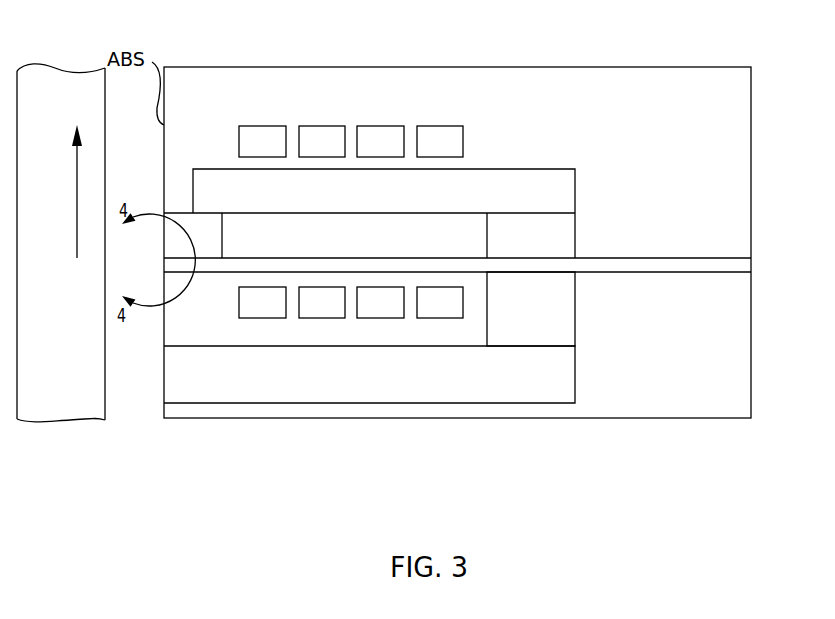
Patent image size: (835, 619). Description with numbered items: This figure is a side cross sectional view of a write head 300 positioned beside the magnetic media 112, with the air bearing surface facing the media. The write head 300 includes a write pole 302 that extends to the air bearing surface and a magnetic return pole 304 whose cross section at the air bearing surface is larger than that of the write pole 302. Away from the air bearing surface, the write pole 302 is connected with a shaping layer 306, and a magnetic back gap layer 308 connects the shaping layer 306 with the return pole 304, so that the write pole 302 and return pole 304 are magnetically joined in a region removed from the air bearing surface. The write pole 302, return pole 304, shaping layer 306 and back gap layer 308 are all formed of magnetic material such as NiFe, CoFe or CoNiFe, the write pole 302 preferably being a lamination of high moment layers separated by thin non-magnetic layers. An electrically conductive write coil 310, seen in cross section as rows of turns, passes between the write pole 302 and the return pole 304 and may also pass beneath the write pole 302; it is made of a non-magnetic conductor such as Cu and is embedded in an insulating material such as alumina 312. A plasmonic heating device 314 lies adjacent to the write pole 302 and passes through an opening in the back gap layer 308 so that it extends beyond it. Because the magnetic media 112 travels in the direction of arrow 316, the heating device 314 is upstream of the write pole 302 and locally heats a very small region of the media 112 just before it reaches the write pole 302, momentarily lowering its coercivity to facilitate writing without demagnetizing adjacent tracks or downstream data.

The magnetic media 112 is at (50, 75).
The write head 300 is at (417, 55).
The write pole 302 is at (200, 233).
The magnetic return pole 304 is at (410, 372).
The shaping layer 306 is at (363, 194).
The magnetic back gap layer 308 is at (552, 235).
The write coil 310 is at (351, 222).
The alumina 312 is at (661, 125).
The plasmonic heating device 314 is at (736, 265).
The arrow 316 is at (76, 201).